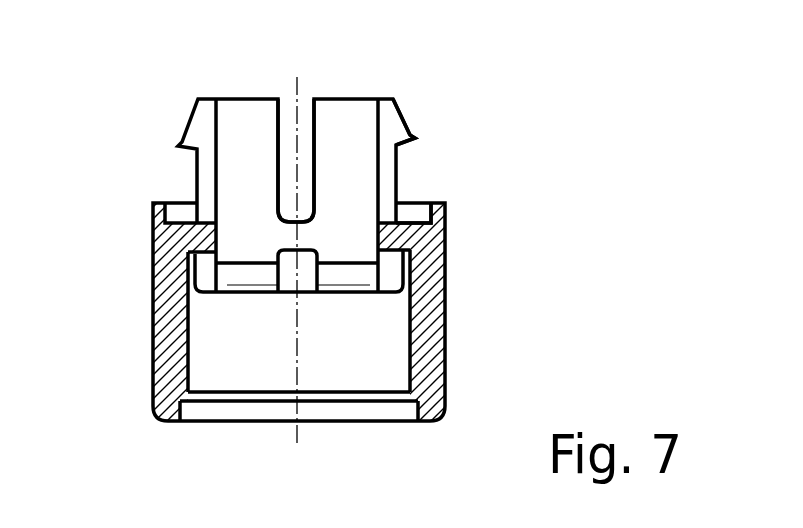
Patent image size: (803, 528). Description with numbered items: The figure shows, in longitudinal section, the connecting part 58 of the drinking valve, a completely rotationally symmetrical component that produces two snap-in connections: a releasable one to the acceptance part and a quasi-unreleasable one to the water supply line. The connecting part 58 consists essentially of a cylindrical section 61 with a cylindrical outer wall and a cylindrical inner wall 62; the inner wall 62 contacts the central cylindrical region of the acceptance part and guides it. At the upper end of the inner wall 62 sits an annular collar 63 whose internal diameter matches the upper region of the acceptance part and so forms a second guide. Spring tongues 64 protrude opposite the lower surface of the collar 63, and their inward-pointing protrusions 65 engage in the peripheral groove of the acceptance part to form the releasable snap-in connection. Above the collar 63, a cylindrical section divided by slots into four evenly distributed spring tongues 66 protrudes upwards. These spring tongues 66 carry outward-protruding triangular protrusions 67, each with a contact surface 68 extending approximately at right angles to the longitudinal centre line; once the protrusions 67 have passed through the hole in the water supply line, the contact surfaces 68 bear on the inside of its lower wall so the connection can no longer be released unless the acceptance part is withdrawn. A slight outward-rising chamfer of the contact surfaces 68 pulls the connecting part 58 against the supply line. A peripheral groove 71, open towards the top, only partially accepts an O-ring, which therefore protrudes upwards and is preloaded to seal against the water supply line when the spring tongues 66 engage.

The connecting part 58 is at (106, 314).
The cylindrical section 61 is at (445, 303).
The cylindrical inner wall 62 is at (188, 358).
The collar 63 is at (193, 218).
The spring tongues 64 is at (242, 128).
The protrusions 65 is at (378, 268).
The spring tongues 66 is at (347, 125).
The protrusions 67 is at (395, 127).
The contact surface 68 is at (413, 148).
The peripheral groove 71 is at (411, 220).